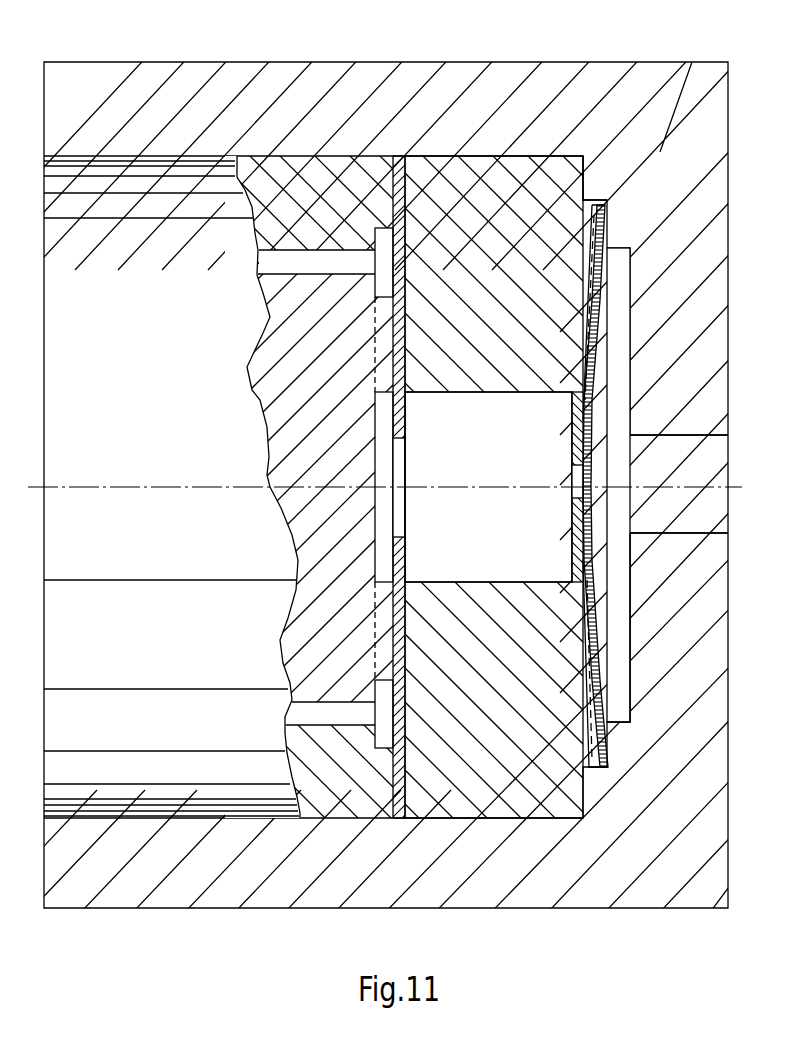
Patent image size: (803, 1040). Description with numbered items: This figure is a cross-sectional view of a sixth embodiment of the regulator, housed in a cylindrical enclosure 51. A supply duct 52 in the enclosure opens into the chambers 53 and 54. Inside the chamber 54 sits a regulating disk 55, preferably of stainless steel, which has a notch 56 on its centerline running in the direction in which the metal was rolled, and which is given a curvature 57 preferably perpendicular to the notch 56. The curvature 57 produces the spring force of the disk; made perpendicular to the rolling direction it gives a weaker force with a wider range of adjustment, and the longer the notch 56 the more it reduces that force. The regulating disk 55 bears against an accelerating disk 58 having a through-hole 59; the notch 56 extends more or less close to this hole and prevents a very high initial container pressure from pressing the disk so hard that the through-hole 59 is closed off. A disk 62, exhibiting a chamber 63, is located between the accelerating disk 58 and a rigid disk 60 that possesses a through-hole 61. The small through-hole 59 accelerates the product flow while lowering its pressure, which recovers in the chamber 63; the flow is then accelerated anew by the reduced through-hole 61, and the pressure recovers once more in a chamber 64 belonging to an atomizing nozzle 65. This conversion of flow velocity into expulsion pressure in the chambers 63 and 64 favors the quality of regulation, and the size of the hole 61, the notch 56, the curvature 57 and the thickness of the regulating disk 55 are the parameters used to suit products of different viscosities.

The cylindrical enclosure 51 is at (663, 73).
The supply duct 52 is at (688, 469).
The chamber 53 is at (620, 575).
The chamber 54 is at (600, 670).
The regulating disk 55 is at (582, 518).
The notch 56 is at (583, 482).
The curvature 57 is at (597, 307).
The accelerating disk 58 is at (582, 182).
The through-hole 59 is at (573, 493).
The rigid disk 60 is at (398, 153).
The through-hole 61 is at (400, 458).
The disk 62 is at (522, 167).
The chamber 63 is at (488, 434).
The chamber 64 is at (387, 518).
The atomizing nozzle 65 is at (207, 565).